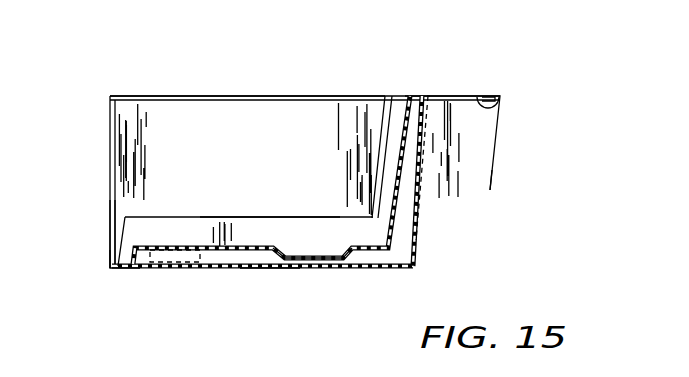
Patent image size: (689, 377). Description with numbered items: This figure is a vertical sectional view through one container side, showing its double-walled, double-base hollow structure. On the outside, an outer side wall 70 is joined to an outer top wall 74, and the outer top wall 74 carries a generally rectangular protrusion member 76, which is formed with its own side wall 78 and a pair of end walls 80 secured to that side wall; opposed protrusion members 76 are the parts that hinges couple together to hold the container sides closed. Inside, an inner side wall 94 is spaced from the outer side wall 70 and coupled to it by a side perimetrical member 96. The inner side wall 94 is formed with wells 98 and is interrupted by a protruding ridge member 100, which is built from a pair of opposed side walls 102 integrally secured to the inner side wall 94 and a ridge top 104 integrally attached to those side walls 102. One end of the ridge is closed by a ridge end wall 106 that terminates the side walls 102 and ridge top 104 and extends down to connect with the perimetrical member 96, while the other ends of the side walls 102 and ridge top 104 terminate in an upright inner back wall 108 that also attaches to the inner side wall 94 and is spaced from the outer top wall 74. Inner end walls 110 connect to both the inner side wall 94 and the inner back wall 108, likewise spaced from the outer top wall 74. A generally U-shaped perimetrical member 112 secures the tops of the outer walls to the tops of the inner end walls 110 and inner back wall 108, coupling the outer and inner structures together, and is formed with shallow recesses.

The outer side wall 70 is at (225, 267).
The outer top wall 74 is at (415, 252).
The protrusion member 76 is at (504, 153).
The side wall of protrusion member 78 is at (327, 246).
The end wall of protrusion member 80 is at (492, 185).
The inner side wall 94 is at (265, 267).
The side perimetrical member 96 is at (112, 265).
The well 98 is at (185, 251).
The ridge member 100 is at (309, 214).
The ridge side wall 102 is at (238, 227).
The ridge top 104 is at (331, 217).
The ridge end wall 106 is at (118, 223).
The inner back wall 108 is at (397, 158).
The inner end wall 110 is at (243, 127).
The perimetrical member 112 is at (158, 96).